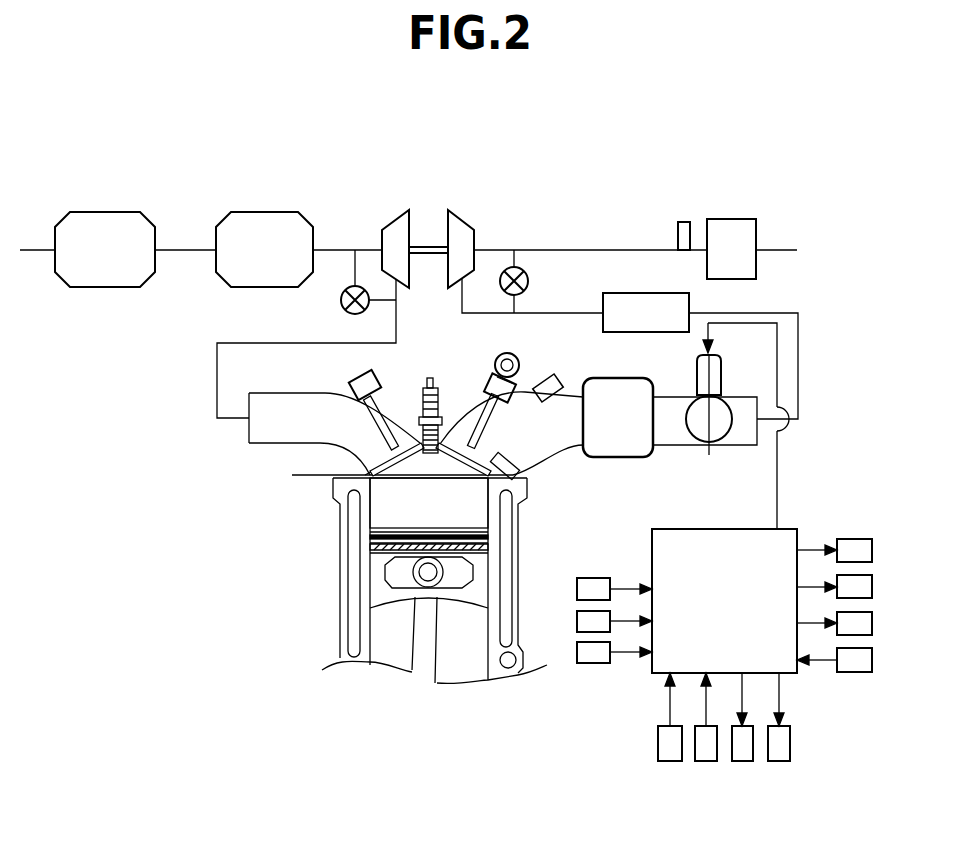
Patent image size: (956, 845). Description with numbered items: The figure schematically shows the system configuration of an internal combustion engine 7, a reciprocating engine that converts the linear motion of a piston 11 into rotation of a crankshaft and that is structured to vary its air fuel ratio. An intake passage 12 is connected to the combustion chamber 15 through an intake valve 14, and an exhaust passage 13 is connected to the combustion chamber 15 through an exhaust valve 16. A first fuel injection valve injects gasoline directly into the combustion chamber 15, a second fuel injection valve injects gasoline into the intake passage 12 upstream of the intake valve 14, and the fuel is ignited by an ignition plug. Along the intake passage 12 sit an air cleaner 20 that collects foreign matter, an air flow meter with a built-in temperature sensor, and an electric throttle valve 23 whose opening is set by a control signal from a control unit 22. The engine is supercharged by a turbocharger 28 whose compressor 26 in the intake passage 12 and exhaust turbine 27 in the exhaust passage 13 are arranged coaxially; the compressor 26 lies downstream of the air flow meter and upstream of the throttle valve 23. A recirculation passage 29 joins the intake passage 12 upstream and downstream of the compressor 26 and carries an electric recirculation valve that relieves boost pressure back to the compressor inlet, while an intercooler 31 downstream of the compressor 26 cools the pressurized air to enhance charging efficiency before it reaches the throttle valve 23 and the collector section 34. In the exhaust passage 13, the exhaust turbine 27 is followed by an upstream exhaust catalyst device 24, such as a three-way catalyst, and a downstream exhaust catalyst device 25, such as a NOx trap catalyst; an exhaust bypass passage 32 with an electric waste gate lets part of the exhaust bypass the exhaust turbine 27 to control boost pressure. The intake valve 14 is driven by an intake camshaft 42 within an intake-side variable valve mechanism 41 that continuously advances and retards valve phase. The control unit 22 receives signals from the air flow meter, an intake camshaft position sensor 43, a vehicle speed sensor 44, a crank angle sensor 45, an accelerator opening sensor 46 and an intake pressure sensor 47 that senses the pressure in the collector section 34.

The internal combustion engine 7 is at (367, 501).
The piston 11 is at (378, 582).
The intake passage 12 is at (568, 440).
The exhaust passage 13 is at (267, 428).
The intake valve 14 is at (472, 432).
The combustion chamber 15 is at (378, 500).
The exhaust valve 16 is at (376, 398).
The air cleaner 20 is at (735, 219).
The control unit 22 is at (778, 531).
The electric throttle valve 23 is at (720, 412).
The upstream exhaust catalyst device 24 is at (263, 212).
The downstream exhaust catalyst device 25 is at (85, 212).
The compressor 26 is at (462, 216).
The exhaust turbine 27 is at (408, 222).
The supercharger (turbocharger) 28 is at (478, 192).
The recirculation passage 29 is at (518, 260).
The intercooler 31 is at (646, 293).
The exhaust bypass passage 32 is at (353, 276).
The collector section 34 is at (628, 450).
The intake-side variable valve mechanism 41 is at (520, 375).
The intake camshaft 42 is at (513, 360).
The intake camshaft position sensor 43 is at (706, 761).
The vehicle speed sensor 44 is at (670, 761).
The crank angle sensor 45 is at (590, 663).
The accelerator opening sensor 46 is at (577, 622).
The intake pressure sensor 47 is at (577, 591).